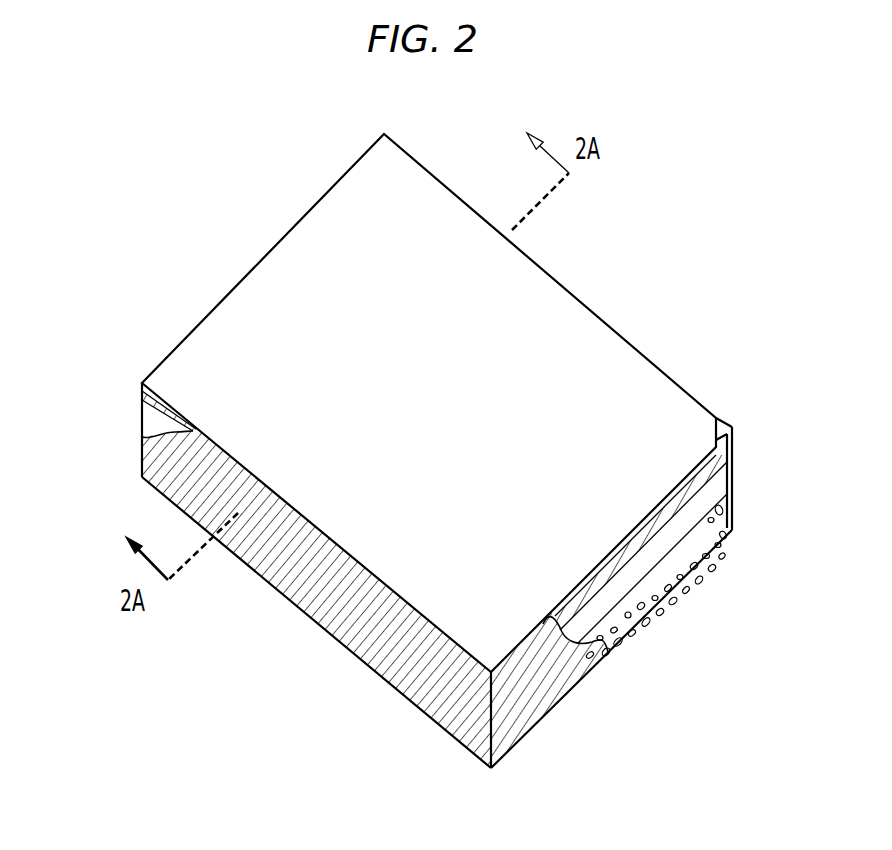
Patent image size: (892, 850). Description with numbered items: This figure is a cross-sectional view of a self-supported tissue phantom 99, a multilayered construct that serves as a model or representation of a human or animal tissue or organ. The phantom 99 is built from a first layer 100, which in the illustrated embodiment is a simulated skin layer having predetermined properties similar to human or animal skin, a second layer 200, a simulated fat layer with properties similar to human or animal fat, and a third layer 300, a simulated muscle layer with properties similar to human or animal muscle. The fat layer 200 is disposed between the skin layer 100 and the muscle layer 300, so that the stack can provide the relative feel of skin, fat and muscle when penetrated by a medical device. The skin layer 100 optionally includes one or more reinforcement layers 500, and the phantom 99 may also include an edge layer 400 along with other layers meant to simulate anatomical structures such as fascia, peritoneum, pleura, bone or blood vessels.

The self-supported tissue phantom 99 is at (643, 190).
The first layer 100 is at (716, 414).
The second layer 200 is at (712, 481).
The third layer 300 is at (705, 538).
The edge layer 400 is at (476, 708).
The reinforcement layer 500 is at (142, 407).